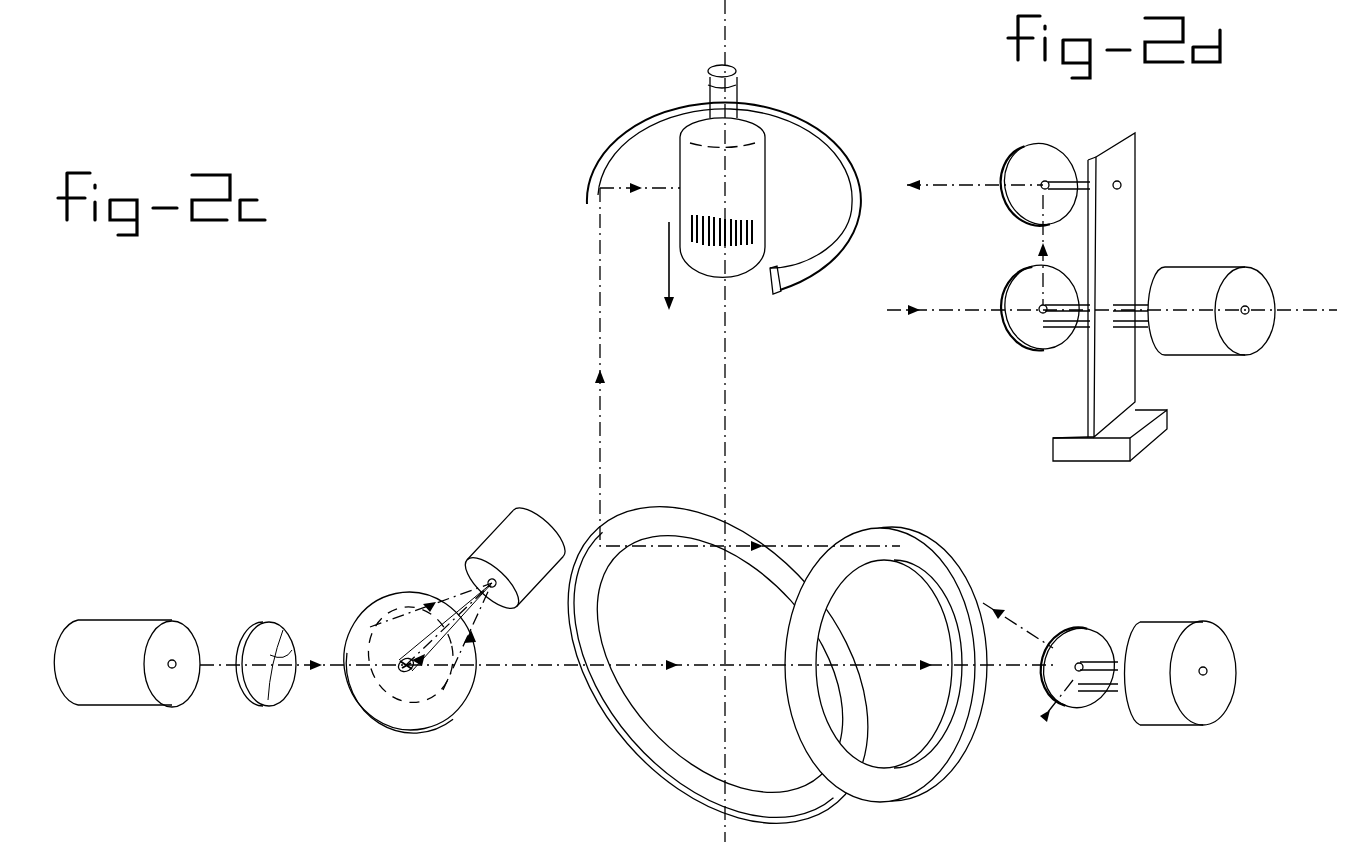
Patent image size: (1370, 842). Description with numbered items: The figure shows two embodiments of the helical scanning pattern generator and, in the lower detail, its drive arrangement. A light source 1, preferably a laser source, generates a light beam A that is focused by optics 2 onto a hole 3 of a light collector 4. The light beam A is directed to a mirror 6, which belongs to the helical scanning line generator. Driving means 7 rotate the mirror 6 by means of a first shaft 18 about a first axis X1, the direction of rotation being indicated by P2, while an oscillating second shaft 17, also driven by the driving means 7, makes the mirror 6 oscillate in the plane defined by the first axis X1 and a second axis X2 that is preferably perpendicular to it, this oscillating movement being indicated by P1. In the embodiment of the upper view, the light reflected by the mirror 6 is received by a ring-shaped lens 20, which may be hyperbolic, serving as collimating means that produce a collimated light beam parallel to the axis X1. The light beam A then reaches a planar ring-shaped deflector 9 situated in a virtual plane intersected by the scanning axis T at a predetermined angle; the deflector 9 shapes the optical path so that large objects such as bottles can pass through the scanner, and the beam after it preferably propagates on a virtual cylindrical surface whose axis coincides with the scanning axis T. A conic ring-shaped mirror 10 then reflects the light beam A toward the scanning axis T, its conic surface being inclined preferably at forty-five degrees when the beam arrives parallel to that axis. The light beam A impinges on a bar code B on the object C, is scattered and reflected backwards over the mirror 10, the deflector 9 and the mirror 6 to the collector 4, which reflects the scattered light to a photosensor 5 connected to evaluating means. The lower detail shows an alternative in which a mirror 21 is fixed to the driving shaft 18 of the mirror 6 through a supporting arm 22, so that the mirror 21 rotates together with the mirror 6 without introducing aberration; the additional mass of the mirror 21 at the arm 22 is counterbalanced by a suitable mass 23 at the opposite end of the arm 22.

In FIG. 2C, the light source 1 is at (103, 688).
In FIG. 2C, the optics 2 is at (278, 698).
In FIG. 2C, the hole 3 is at (408, 674).
In FIG. 2C, the light collector 4 is at (394, 694).
In FIG. 2C, the photosensor 5 is at (516, 530).
In FIG. 2C, the mirror 6 is at (1068, 650).
In FIG. 2D, the mirror 6 is at (1018, 332).
In FIG. 2C, the driving means 7 is at (1166, 626).
In FIG. 2D, the driving means 7 is at (1245, 286).
In FIG. 2C, the planar ring-shaped deflector 9 is at (610, 703).
In FIG. 2C, the conic ring-shaped mirror 10 is at (635, 148).
In FIG. 2D, the second shaft 17 is at (1075, 333).
In FIG. 2C, the first shaft 18 is at (1092, 658).
In FIG. 2D, the first shaft 18 is at (1128, 304).
In FIG. 2C, the ring-shaped lens 20 is at (922, 540).
In FIG. 2D, the mirror 21 is at (1040, 162).
In FIG. 2D, the supporting arm 22 is at (1135, 168).
In FIG. 2D, the mass 23 is at (1142, 452).
In FIG. 2C, the light beam A is at (323, 670).
In FIG. 2D, the light beam A is at (918, 318).
In FIG. 2C, the bar code B is at (730, 243).
In FIG. 2C, the object C is at (770, 165).
In FIG. 2C, the scanning axis T is at (729, 421).
In FIG. 2C, the first axis X1 is at (906, 664).
In FIG. 2D, the first axis X1 is at (1313, 310).
In FIG. 2C, the second axis X2 is at (1044, 722).
In FIG. 2C, the oscillating movement P1 is at (1100, 610).
In FIG. 2C, the direction of rotation P2 is at (1012, 650).
In FIG. 2D, the direction of rotation P2 is at (983, 325).